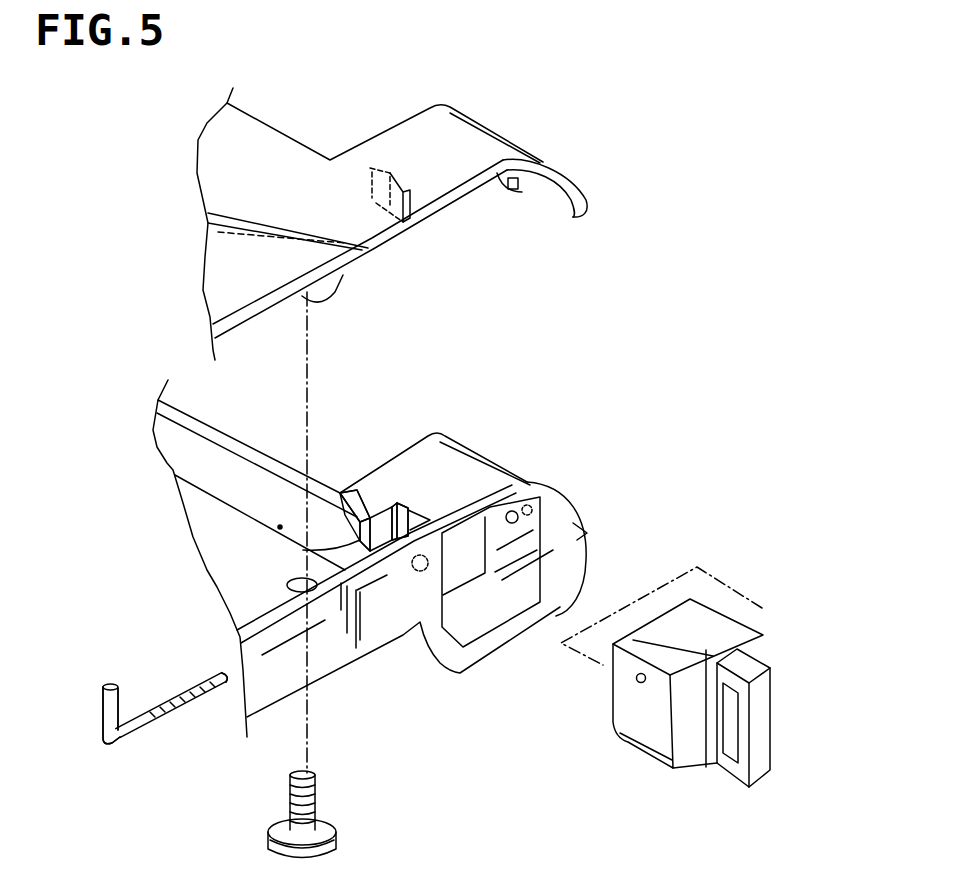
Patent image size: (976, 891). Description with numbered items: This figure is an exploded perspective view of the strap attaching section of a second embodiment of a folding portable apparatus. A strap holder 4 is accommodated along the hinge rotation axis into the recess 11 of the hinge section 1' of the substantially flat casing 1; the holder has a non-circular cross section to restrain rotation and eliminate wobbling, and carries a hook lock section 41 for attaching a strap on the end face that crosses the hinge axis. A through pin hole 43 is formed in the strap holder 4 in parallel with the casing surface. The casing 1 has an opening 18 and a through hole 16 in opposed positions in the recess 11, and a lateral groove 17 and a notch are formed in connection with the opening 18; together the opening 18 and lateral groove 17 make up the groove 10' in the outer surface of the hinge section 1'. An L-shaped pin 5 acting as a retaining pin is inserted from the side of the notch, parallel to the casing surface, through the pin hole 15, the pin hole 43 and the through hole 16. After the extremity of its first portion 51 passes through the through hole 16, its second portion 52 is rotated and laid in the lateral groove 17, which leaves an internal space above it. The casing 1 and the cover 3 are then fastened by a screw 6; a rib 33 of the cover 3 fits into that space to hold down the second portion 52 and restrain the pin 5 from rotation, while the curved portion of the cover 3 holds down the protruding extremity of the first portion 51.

The cover 3 is at (499, 145).
The rib 33 is at (392, 228).
The groove 10' is at (405, 437).
The lateral groove 17 is at (370, 493).
The opening 18 is at (413, 507).
The through hole 16 is at (518, 507).
The hinge section 1' is at (457, 558).
The casing 1 is at (343, 660).
The recess 11 is at (490, 630).
The pin hole 15 is at (405, 577).
The L-shaped pin 5 is at (163, 720).
The first portion 51 is at (218, 672).
The second portion 52 is at (110, 685).
The screw 6 is at (337, 840).
The strap holder 4 is at (693, 745).
The pin hole 43 is at (640, 683).
The hook lock section 41 is at (771, 720).